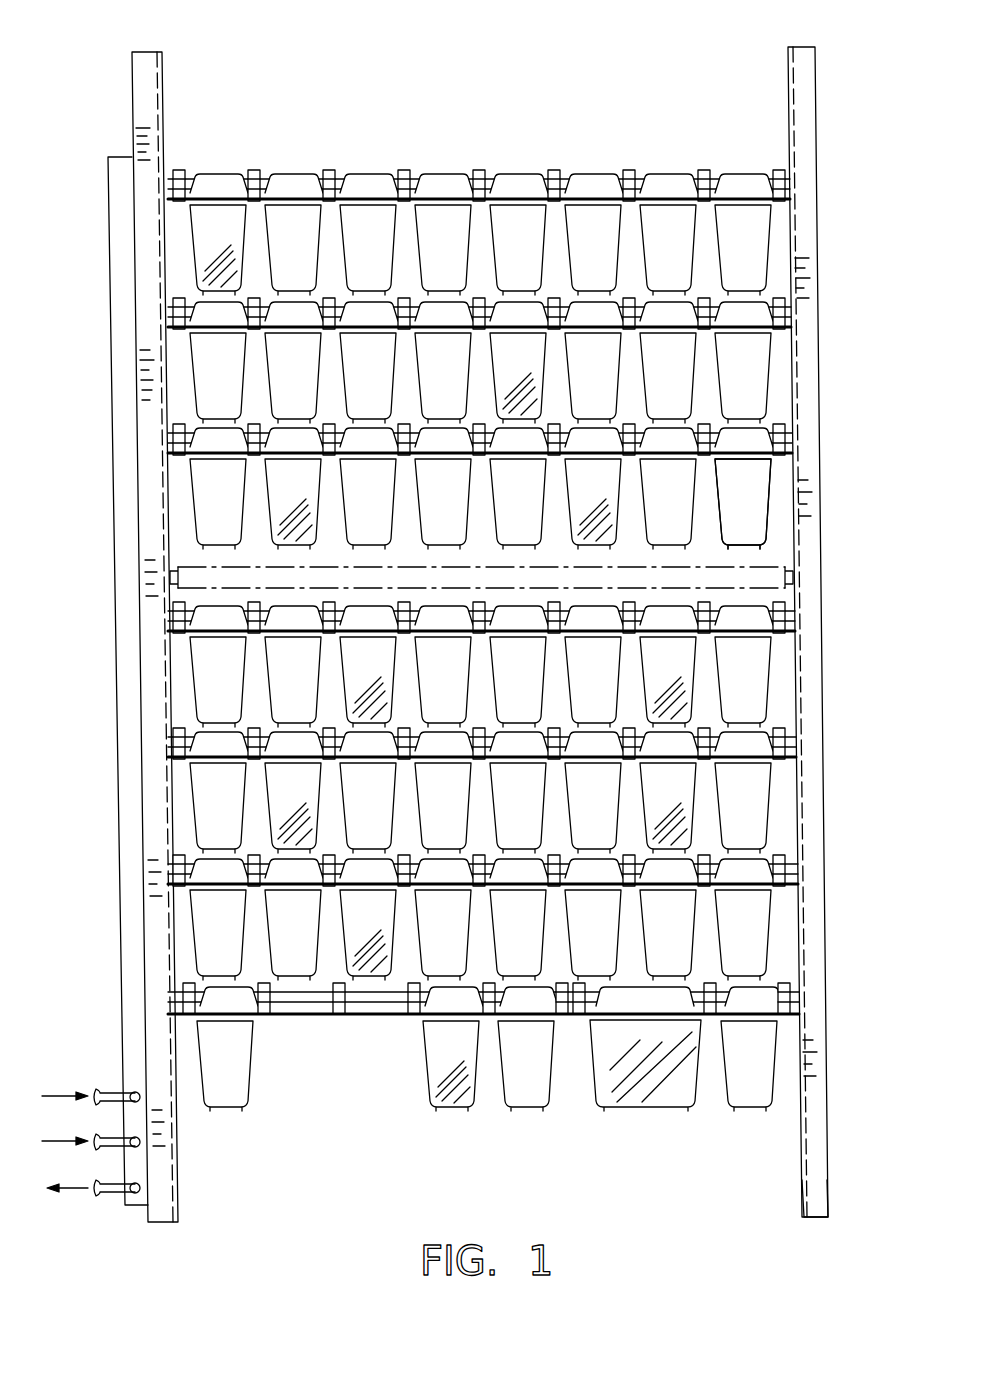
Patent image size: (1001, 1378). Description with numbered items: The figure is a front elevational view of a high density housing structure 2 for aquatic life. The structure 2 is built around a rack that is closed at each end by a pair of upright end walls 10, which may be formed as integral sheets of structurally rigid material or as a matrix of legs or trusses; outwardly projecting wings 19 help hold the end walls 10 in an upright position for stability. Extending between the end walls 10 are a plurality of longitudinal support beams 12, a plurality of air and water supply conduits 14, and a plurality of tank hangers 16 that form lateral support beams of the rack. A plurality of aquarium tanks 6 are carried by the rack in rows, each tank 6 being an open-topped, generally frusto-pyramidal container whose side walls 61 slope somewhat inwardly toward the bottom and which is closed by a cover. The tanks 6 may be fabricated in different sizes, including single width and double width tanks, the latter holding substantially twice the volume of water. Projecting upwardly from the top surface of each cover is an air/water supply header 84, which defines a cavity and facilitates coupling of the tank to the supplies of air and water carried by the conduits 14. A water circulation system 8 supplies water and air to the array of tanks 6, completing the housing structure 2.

The high density housing structure 2 is at (462, 92).
The aquarium tank 6 is at (740, 370).
The water circulation system 8 is at (114, 1246).
The end wall 10 is at (148, 80).
The longitudinal support beam 12 is at (165, 306).
The air and water supply conduit 14 is at (243, 180).
The tank hanger 16 is at (690, 177).
The outwardly projecting wing 19 is at (815, 1193).
The side wall 61 is at (742, 510).
The air/water supply header 84 is at (362, 181).